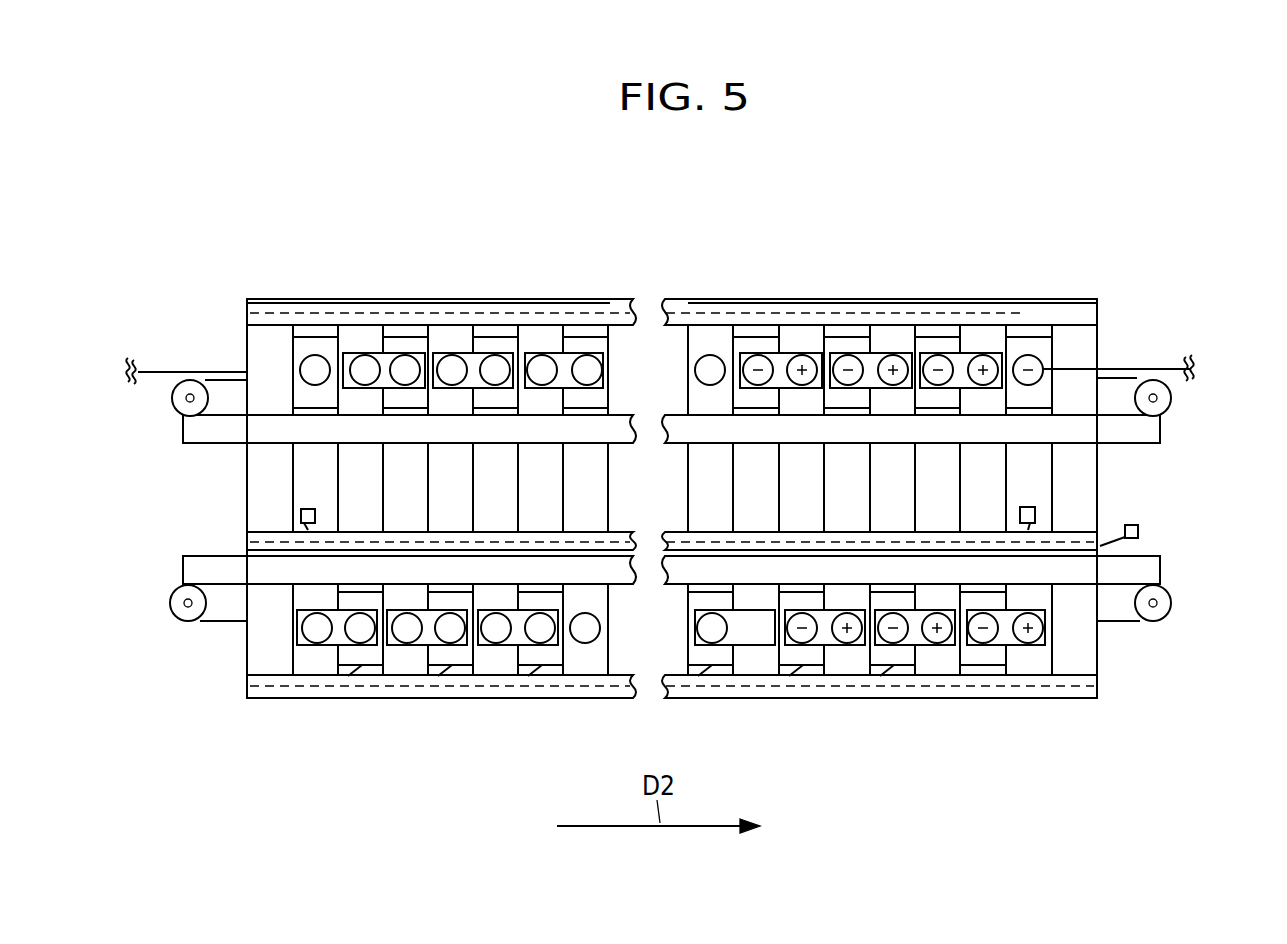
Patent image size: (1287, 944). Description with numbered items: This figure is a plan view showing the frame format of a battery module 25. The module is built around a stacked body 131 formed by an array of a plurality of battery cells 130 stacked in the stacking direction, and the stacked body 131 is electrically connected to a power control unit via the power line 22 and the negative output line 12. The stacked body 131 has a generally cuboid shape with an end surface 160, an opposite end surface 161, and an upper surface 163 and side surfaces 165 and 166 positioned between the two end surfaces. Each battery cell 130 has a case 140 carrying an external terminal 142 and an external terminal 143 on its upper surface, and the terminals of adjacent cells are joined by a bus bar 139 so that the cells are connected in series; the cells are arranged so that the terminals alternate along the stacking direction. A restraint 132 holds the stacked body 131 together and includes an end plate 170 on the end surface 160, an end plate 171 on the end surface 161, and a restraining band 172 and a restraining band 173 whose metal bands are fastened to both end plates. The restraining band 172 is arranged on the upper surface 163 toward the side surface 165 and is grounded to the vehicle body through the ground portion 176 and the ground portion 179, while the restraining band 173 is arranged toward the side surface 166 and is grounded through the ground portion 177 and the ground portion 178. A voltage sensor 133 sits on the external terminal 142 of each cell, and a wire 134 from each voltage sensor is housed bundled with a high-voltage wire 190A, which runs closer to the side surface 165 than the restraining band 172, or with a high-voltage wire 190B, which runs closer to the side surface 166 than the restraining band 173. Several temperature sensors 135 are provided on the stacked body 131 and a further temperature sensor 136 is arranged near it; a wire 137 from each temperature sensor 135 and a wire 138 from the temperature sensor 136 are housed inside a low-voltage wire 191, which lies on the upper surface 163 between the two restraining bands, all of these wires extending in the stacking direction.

The negative output line 12 is at (1153, 369).
The power line 22 is at (168, 371).
The battery module 25 is at (670, 241).
The battery cell 130 is at (944, 337).
The stacked body 131 is at (906, 276).
The restraint 132 is at (219, 656).
The voltage sensor 133 is at (1040, 727).
The wire 134 is at (497, 343).
The temperature sensor 135 is at (306, 509).
The temperature sensor 136 is at (1143, 531).
The wire 137 is at (304, 528).
The wire 138 is at (1106, 534).
The bus bar 139 is at (788, 352).
The case 140 is at (764, 663).
The external terminal 142 is at (760, 335).
The external terminal 143 is at (850, 335).
The end surface 160 is at (290, 352).
The end surface 161 is at (1058, 665).
The upper surface 163 is at (407, 470).
The side surface 165 is at (328, 300).
The side surface 166 is at (563, 698).
The end plate 170 is at (270, 665).
The end plate 171 is at (1085, 343).
The restraining band 172 is at (1058, 337).
The restraining band 173 is at (500, 567).
The ground portion 176 is at (172, 397).
The ground portion 177 is at (170, 603).
The ground portion 178 is at (1175, 603).
The ground portion 179 is at (1175, 398).
The high-voltage wire 190A is at (598, 322).
The high-voltage wire 190B is at (838, 686).
The low-voltage wire 191 is at (262, 534).